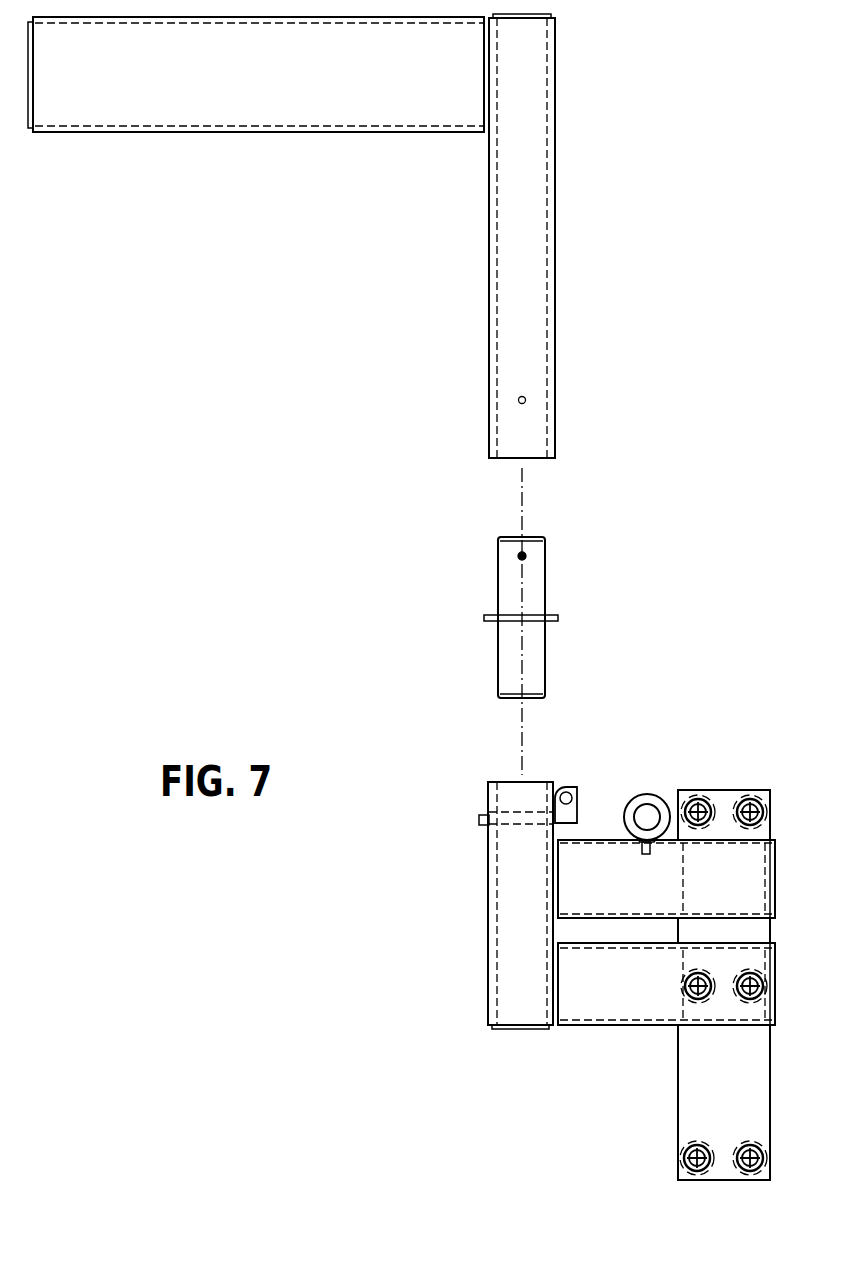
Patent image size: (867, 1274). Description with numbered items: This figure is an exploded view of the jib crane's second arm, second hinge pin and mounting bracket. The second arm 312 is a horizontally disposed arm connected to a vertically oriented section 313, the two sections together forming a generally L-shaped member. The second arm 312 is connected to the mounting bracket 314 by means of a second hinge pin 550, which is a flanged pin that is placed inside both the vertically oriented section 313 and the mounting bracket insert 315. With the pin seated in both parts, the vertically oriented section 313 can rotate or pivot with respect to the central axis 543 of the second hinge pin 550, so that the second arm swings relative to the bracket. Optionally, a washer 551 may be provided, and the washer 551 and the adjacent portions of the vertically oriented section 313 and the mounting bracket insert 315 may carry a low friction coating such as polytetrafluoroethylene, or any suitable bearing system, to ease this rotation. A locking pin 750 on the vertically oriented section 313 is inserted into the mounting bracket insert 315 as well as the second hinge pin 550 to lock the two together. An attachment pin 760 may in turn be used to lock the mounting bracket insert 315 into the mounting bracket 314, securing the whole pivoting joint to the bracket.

The second arm 312 is at (266, 92).
The vertically oriented section 313 is at (497, 312).
The central axis 543 is at (522, 484).
The second hinge pin 550 is at (509, 573).
The washer 551 is at (548, 607).
The mounting bracket 314 is at (723, 778).
The attachment pin 760 is at (637, 797).
The locking pin 750 is at (511, 813).
The mounting bracket insert 315 is at (518, 979).